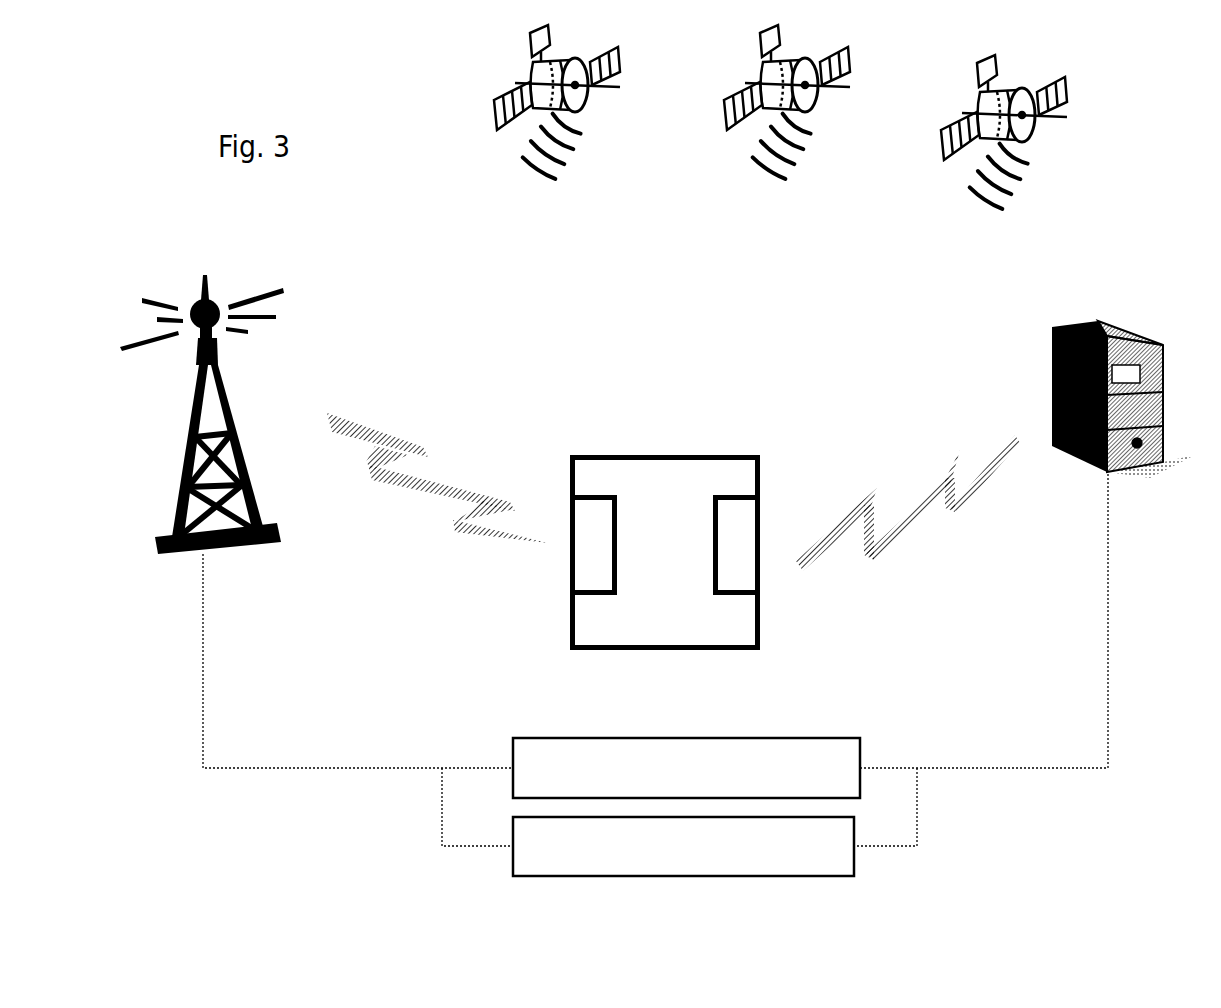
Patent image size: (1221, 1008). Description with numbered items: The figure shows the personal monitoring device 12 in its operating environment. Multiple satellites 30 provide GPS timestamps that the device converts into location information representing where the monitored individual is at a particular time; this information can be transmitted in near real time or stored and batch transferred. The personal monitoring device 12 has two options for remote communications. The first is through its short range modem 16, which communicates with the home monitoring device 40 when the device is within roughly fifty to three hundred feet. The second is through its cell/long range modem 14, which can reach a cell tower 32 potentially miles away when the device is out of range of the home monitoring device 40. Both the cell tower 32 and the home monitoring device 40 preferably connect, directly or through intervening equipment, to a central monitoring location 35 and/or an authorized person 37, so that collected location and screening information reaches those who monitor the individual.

The personal monitoring device 12 is at (657, 437).
The cell/long range modem 14 is at (565, 518).
The short range modem 16 is at (763, 520).
The satellites 30 is at (487, 140).
The cell tower 32 is at (257, 573).
The central monitoring location 35 is at (686, 768).
The authorized person 37 is at (683, 846).
The home monitoring device 40 is at (1057, 468).